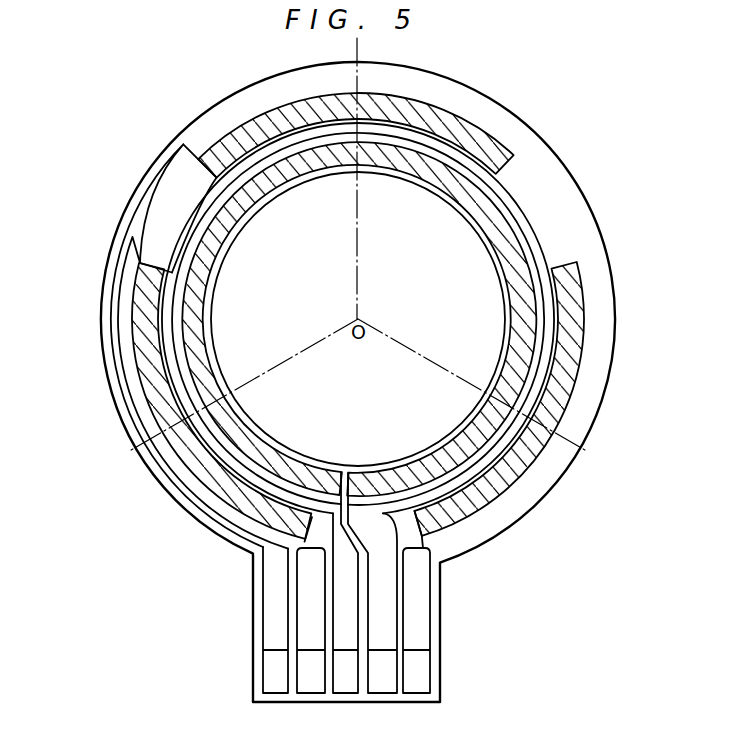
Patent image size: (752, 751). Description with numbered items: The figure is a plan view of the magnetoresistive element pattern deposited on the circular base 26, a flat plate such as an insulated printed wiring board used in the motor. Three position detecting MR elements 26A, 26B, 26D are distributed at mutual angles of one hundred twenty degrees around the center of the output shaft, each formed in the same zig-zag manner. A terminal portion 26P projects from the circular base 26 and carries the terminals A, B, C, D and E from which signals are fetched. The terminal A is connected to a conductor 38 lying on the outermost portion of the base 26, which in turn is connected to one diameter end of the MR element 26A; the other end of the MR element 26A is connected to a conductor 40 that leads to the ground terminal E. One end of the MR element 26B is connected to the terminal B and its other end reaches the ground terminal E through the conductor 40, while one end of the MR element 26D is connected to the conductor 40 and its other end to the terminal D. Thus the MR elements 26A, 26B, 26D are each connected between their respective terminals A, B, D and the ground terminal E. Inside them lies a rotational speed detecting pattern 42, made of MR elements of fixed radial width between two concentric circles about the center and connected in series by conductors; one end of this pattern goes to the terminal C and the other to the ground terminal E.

The base 26 is at (597, 281).
The MR element 26A is at (433, 105).
The MR element 26B is at (158, 408).
The MR element 26D is at (575, 262).
The terminal portion 26P is at (387, 607).
The conductor 38 is at (125, 249).
The conductor 40 is at (530, 242).
The rotational speed detecting pattern 42 is at (493, 226).
The terminal A is at (286, 692).
The terminal B is at (323, 692).
The terminal C is at (359, 692).
The terminal D is at (429, 692).
The ground terminal E is at (394, 692).